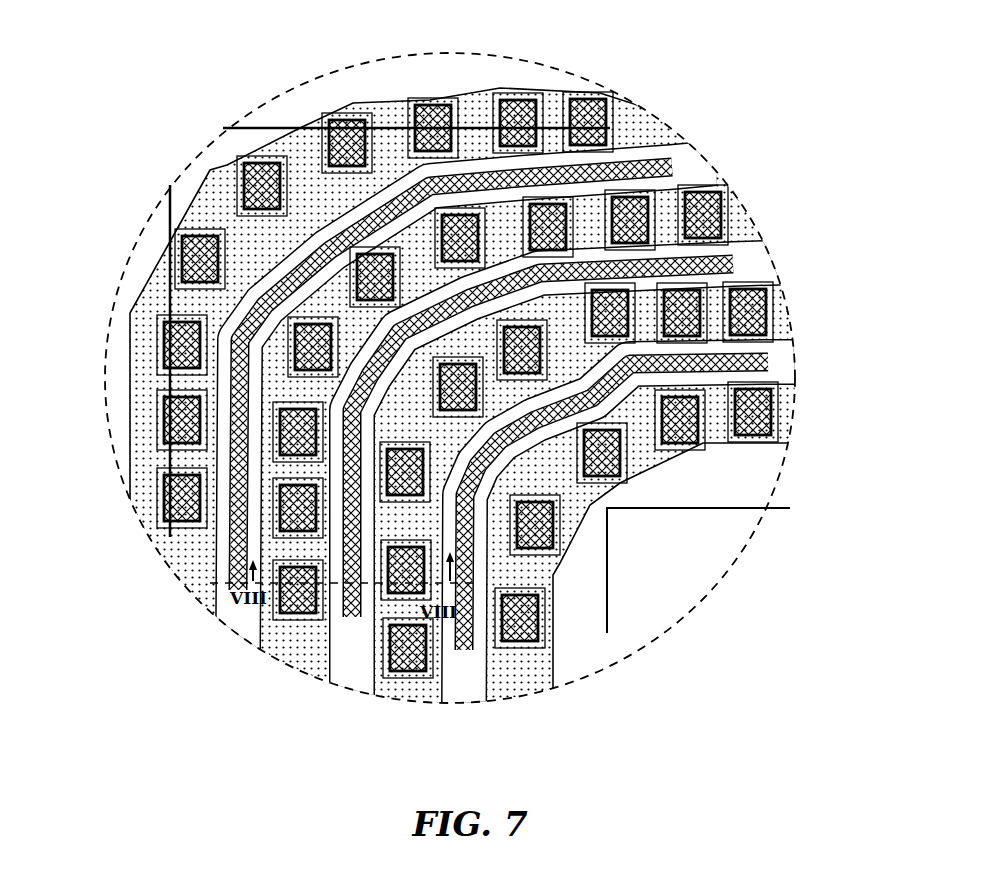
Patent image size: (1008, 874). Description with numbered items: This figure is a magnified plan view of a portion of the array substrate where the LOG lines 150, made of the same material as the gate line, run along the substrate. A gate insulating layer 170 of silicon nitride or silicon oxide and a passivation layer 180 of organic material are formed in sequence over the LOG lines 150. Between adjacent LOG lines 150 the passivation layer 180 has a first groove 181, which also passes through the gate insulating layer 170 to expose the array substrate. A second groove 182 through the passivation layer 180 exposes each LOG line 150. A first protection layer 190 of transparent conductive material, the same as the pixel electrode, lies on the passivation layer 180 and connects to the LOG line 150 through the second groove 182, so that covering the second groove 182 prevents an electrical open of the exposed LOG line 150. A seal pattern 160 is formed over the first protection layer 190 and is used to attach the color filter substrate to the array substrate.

The LOG line 150 is at (718, 452).
The seal pattern 160 is at (653, 510).
The gate insulating layer 170 is at (257, 607).
The passivation layer 180 is at (383, 410).
The first groove 181 is at (230, 563).
The second groove 182 is at (183, 417).
The first protection layer 190 is at (153, 430).